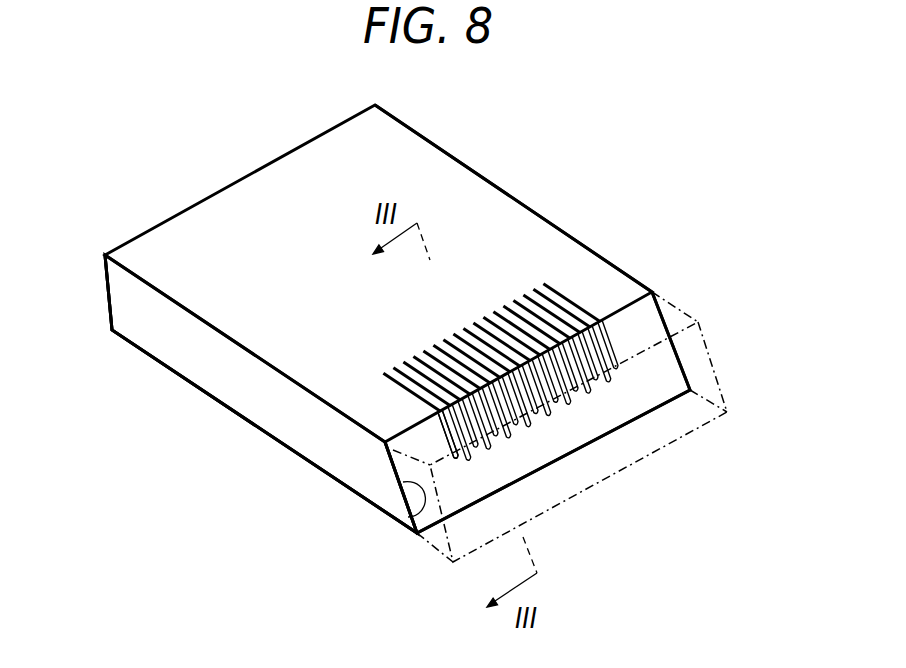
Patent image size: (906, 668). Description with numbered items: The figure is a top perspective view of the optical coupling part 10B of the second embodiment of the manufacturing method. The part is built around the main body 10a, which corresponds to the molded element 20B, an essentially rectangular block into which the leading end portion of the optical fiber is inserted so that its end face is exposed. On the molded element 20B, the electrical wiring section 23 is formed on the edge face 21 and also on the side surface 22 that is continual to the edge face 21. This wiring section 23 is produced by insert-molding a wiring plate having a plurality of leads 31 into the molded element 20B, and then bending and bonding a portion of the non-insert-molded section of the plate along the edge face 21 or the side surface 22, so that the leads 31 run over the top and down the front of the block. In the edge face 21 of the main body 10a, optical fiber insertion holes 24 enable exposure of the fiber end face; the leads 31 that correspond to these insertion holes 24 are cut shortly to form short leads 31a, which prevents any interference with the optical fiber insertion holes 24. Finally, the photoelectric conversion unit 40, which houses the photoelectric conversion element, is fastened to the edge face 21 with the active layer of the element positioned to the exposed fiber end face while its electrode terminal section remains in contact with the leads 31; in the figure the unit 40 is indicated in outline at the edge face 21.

The optical coupling part 10B is at (687, 224).
The molded element 20B is at (133, 374).
The main body 10a is at (247, 405).
The side surface 22 is at (505, 222).
The electrical wiring section 23 is at (587, 276).
The edge face 21 is at (435, 450).
The optical fiber insertion hole 24 is at (432, 440).
The leads 31 is at (403, 362).
The short leads 31a is at (432, 427).
The photoelectric conversion unit 40 is at (677, 450).